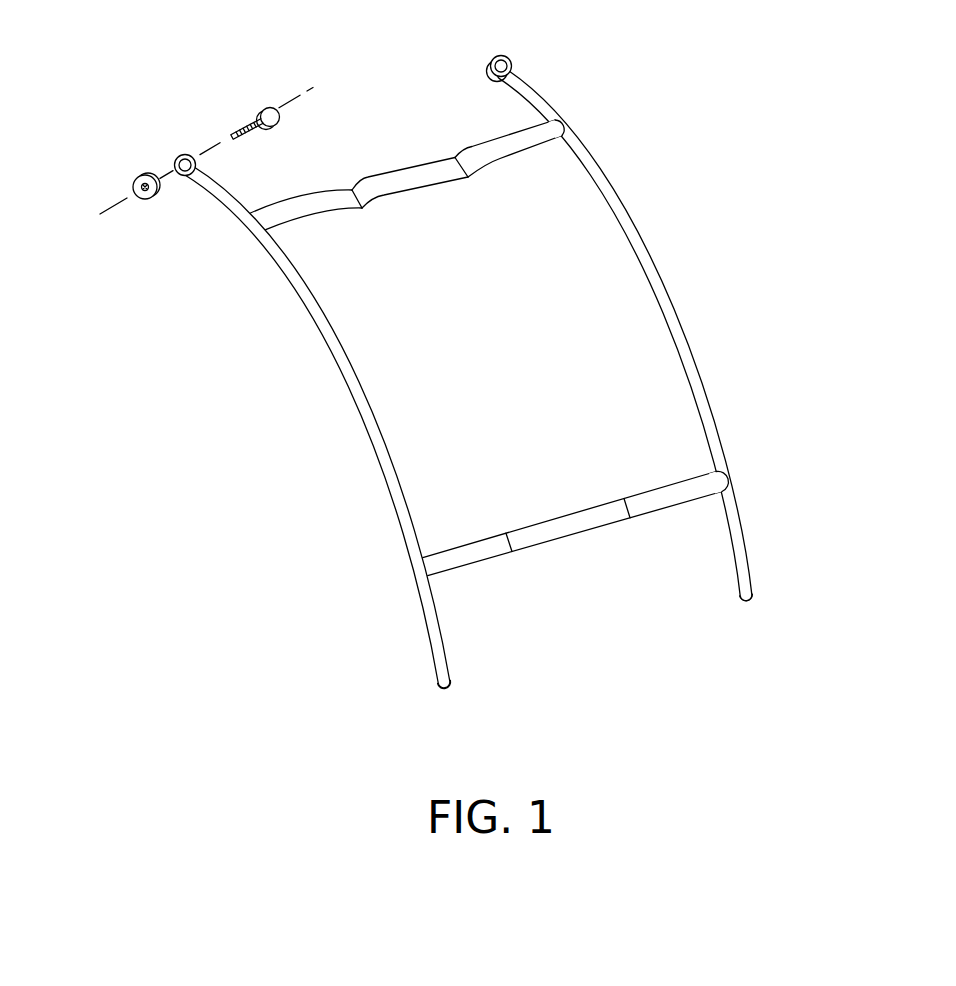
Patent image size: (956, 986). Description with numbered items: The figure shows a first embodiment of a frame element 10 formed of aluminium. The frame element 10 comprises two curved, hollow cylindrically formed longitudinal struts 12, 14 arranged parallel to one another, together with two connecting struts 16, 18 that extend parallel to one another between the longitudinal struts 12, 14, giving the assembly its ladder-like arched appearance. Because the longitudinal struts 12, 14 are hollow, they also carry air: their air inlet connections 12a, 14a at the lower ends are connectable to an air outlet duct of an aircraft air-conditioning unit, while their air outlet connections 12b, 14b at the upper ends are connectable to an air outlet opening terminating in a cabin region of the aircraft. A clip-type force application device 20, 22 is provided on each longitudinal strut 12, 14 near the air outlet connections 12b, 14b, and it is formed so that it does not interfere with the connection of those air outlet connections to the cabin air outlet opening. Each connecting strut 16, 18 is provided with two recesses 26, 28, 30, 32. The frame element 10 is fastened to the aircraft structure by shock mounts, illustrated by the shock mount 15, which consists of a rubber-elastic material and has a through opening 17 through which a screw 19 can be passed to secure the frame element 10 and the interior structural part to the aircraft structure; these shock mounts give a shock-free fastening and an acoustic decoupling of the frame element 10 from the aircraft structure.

The frame element 10 is at (605, 86).
The longitudinal strut 12 is at (223, 192).
The air inlet connection 12a is at (442, 686).
The air outlet connection 12b is at (197, 166).
The longitudinal strut 14 is at (624, 212).
The air inlet connection 14a is at (747, 600).
The air outlet connection 14b is at (489, 69).
The shock mount 15 is at (141, 174).
The connecting strut 16 is at (407, 168).
The through opening 17 is at (150, 200).
The connecting strut 18 is at (569, 521).
The screw 19 is at (266, 106).
The clip-type force application device 20 is at (182, 154).
The clip-type force application device 22 is at (507, 56).
The recess 26 is at (363, 210).
The recess 28 is at (468, 179).
The recess 30 is at (512, 553).
The recess 32 is at (631, 519).